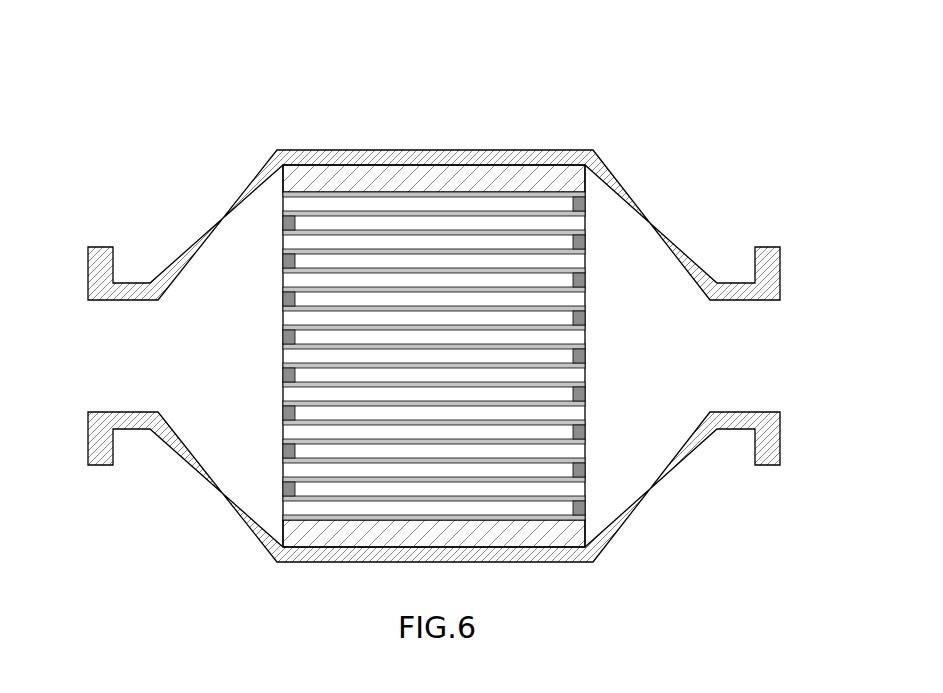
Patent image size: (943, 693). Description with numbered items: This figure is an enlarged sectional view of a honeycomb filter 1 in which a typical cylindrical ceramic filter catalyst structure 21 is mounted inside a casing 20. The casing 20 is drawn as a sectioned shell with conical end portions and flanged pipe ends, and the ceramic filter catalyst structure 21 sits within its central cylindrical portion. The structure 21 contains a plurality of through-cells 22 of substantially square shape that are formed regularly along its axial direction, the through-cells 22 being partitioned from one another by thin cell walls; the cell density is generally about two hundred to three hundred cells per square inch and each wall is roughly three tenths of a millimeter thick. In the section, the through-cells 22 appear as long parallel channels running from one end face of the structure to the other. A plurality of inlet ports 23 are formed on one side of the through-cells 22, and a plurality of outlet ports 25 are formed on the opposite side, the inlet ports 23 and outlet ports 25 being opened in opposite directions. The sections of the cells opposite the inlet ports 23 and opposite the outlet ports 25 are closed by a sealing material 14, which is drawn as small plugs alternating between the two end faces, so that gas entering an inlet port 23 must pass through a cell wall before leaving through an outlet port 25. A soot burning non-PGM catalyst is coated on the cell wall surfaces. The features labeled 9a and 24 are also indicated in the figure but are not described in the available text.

The exhaust gas purification device 1 is at (423, 308).
The casing 20 is at (688, 246).
The cylindrical ceramic filter catalyst structure 21 is at (485, 192).
The filter end face 9a is at (285, 281).
The through-cells 22 is at (567, 298).
The sealing material 14 is at (283, 410).
The inlet ports 23 is at (537, 268).
The inlet opening 24 is at (290, 317).
The outlet ports 25 is at (577, 373).